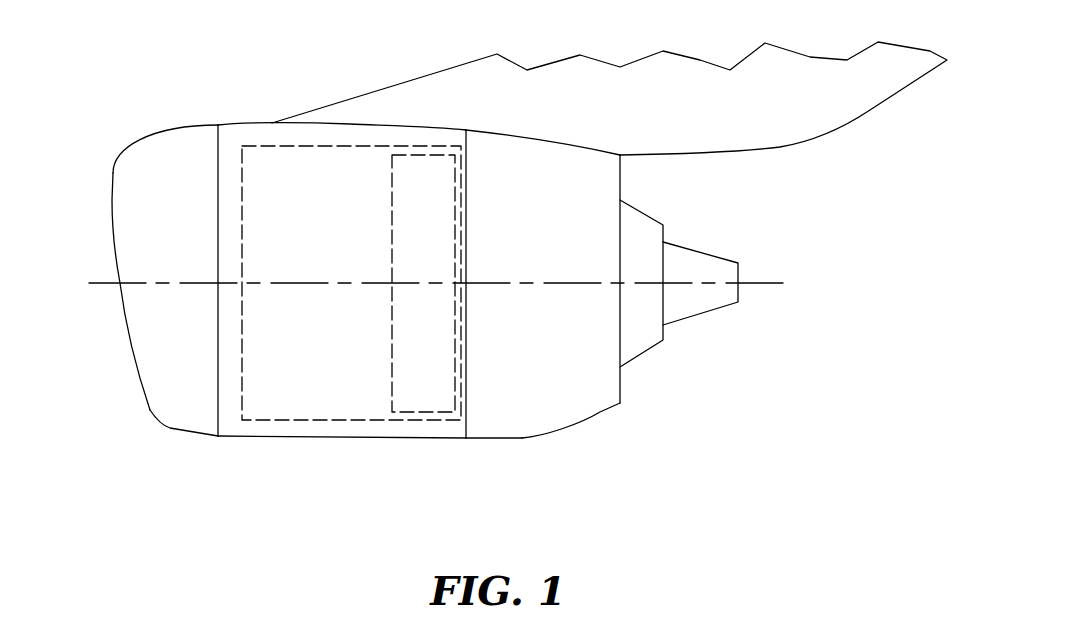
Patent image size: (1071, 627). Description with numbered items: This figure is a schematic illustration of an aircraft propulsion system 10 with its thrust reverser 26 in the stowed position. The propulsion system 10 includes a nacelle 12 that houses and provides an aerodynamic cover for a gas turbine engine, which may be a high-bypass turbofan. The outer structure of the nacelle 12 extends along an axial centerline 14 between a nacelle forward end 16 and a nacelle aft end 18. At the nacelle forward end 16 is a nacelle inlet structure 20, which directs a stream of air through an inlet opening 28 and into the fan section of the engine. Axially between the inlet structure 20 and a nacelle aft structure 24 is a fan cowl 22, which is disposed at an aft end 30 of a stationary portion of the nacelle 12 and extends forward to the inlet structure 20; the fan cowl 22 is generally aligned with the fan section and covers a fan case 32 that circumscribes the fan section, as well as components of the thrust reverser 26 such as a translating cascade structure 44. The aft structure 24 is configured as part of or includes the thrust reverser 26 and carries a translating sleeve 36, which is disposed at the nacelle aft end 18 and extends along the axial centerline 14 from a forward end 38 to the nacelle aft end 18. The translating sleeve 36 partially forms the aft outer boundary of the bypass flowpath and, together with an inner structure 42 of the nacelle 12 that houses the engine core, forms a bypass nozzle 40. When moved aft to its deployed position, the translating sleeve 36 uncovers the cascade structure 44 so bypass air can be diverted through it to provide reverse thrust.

The aircraft propulsion system 10 is at (123, 80).
The nacelle 12 is at (254, 119).
The axial centerline 14 is at (785, 287).
The nacelle forward end 16 is at (113, 176).
The nacelle aft end 18 is at (622, 177).
The nacelle inlet structure 20 is at (168, 428).
The fan cowl 22 is at (224, 440).
The nacelle aft structure 24 is at (566, 437).
The thrust reverser 26 is at (523, 437).
The inlet opening 28 is at (113, 245).
The aft end of stationary portion of the nacelle 30 is at (466, 424).
The fan case 32 is at (267, 421).
The translating sleeve 36 is at (602, 414).
The forward end of translating sleeve 38 is at (462, 430).
The bypass nozzle 40 is at (623, 388).
The inner structure of the nacelle 42 is at (656, 345).
The translating cascade structure 44 is at (450, 152).